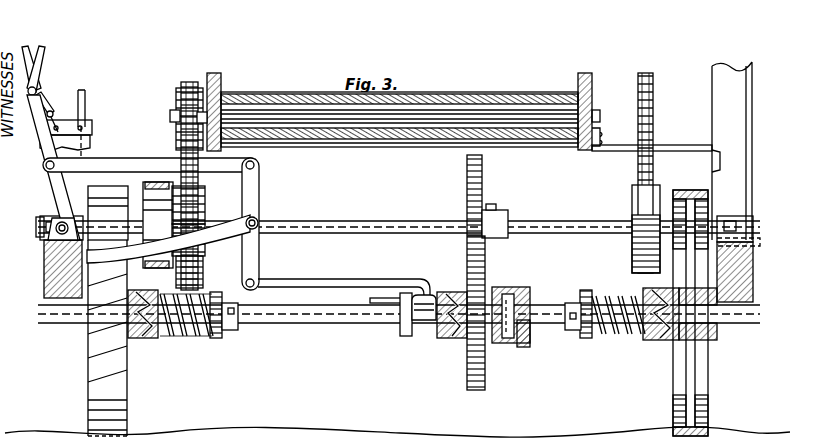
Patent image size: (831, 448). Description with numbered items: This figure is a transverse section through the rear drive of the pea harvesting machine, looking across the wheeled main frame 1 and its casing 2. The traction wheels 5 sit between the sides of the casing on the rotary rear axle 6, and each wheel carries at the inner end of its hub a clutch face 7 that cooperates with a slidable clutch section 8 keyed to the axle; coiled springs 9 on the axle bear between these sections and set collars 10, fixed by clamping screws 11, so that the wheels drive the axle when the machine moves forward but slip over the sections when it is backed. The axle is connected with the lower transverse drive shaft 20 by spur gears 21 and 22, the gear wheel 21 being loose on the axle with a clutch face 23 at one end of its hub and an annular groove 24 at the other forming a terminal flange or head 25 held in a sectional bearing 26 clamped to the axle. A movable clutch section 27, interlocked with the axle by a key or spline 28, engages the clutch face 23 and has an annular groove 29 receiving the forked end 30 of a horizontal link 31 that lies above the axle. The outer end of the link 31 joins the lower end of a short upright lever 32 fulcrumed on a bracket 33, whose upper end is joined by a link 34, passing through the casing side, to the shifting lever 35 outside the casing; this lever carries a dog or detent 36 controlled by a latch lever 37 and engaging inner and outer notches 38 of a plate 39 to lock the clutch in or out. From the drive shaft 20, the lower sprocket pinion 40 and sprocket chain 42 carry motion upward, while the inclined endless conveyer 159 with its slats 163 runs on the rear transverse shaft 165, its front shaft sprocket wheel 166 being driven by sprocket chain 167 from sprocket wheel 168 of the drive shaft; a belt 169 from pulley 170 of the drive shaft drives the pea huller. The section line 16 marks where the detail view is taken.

The wheeled main frame 1 is at (44, 258).
The casing 2 is at (712, 95).
The traction wheels 5 is at (92, 366).
The rotary rear axle 6 is at (276, 323).
The clutch faces 7 is at (132, 340).
The slidable clutch sections 8 is at (146, 338).
The coiled springs 9 is at (190, 336).
The set collars 10 is at (216, 340).
The clamping screws 11 is at (226, 332).
The section line 16— 16 is at (502, 284).
The lower transverse drive shaft 20 is at (556, 232).
The gear wheel 21 is at (471, 386).
The gear wheel 22 is at (483, 162).
The clutch face 23 is at (460, 340).
The annular groove 24 is at (506, 343).
The terminal flange or head 25 is at (526, 290).
The sectional bearing 26 is at (530, 340).
The movable clutch section 27 is at (446, 338).
The key or spline 28 is at (382, 303).
The annular groove 29 is at (412, 340).
The forked end 30 is at (432, 293).
The horizontal link 31 is at (385, 280).
The short upright lever 32 is at (262, 248).
The bracket 33 is at (219, 240).
The link 34 is at (146, 153).
The shifting lever 35 is at (52, 200).
The dog or detent 36 is at (50, 102).
The latch lever 37 is at (44, 58).
The notches 38 is at (88, 122).
The plate 39 is at (90, 142).
The lower sprocket pinion 40 is at (633, 192).
The sprocket chain 42 is at (653, 120).
The inclined endless conveyer 159 is at (303, 93).
The slats 163 is at (526, 84).
The rear transverse shaft 165 is at (172, 114).
The sprocket wheel 166 is at (198, 90).
The sprocket chain 167 is at (205, 192).
The sprocket wheel 168 is at (205, 212).
The belt 169 is at (166, 268).
The pulley 170 is at (148, 196).